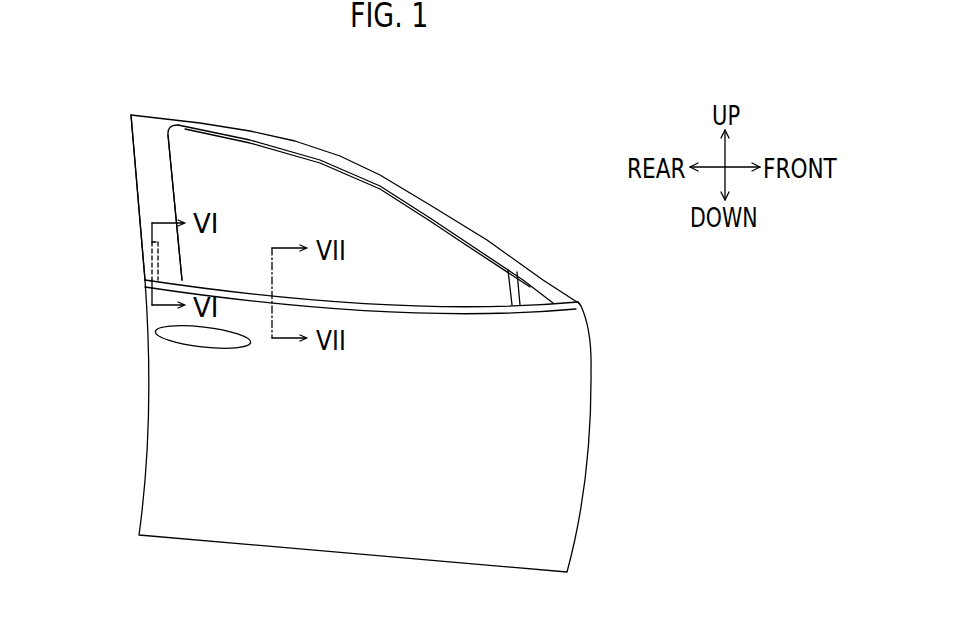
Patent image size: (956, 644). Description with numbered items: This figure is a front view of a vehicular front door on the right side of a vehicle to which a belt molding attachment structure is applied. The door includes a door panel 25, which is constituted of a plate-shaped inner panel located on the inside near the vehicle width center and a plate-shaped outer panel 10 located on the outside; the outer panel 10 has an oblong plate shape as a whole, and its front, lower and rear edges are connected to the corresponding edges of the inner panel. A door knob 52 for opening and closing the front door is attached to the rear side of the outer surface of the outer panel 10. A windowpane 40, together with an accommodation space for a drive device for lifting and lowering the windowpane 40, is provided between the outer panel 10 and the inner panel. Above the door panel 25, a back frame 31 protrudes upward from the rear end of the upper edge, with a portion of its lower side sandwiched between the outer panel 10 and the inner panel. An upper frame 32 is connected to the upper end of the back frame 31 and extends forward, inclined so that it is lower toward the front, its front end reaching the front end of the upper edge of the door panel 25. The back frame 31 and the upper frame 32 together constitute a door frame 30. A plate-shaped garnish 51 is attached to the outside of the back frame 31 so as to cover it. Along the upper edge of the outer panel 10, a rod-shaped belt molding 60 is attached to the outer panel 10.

The outer panel 10 is at (148, 397).
The door panel 25 is at (631, 400).
The door frame 30 is at (132, 148).
The back frame 31 is at (135, 177).
The upper frame 32 is at (295, 141).
The windowpane 40 is at (298, 212).
The garnish 51 is at (170, 183).
The door knob 52 is at (232, 350).
The belt molding 60 is at (330, 296).